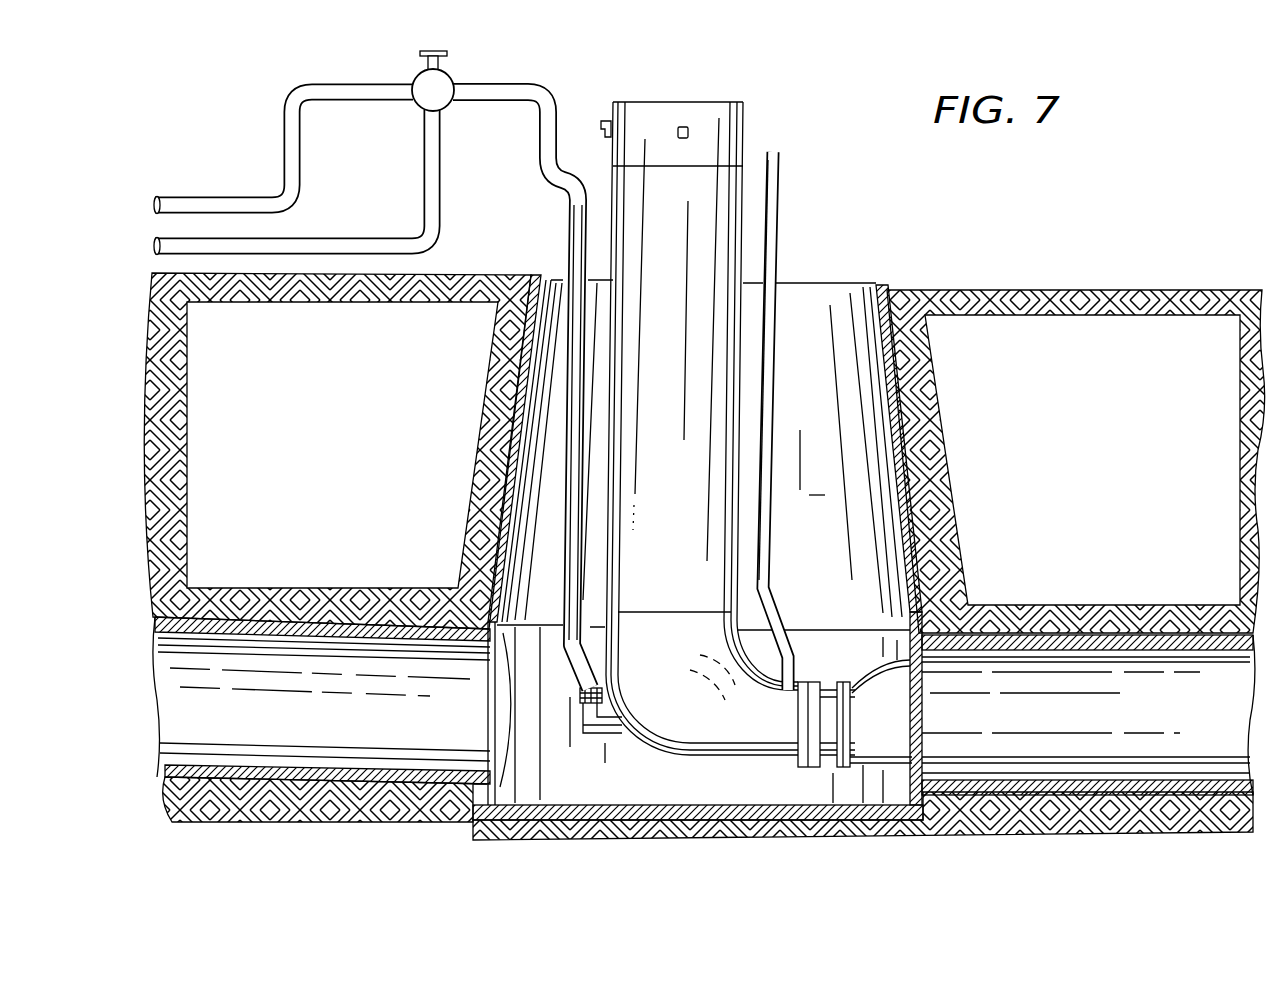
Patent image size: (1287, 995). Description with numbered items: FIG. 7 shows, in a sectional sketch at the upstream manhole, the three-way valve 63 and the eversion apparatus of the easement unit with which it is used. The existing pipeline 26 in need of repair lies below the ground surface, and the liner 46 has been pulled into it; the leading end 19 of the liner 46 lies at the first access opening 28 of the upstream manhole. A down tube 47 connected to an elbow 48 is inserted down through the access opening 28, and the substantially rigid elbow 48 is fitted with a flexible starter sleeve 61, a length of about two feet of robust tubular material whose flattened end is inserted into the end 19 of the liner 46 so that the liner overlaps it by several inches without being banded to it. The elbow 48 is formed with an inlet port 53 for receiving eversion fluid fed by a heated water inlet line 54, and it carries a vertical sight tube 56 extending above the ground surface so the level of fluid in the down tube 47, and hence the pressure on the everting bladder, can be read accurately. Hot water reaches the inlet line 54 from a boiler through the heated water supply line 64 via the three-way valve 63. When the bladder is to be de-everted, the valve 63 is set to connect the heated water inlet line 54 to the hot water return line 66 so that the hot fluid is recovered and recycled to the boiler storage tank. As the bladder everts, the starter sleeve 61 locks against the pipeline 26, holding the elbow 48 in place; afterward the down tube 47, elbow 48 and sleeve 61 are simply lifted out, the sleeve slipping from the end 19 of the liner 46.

The 3-way valve 63 is at (410, 75).
The hot water return line 66 is at (283, 168).
The heated water supply line 64 is at (378, 238).
The heated water inlet line 54 is at (573, 210).
The vertical sight tube 56 is at (780, 239).
The first access opening 28 is at (843, 276).
The down tube 47 is at (744, 378).
The leading end of liner 19 is at (955, 636).
The liner 46 is at (1083, 642).
The inlet port 53 is at (618, 737).
The elbow 48 is at (716, 727).
The starter sleeve 61 is at (872, 742).
The existing pipeline 26 is at (1063, 790).